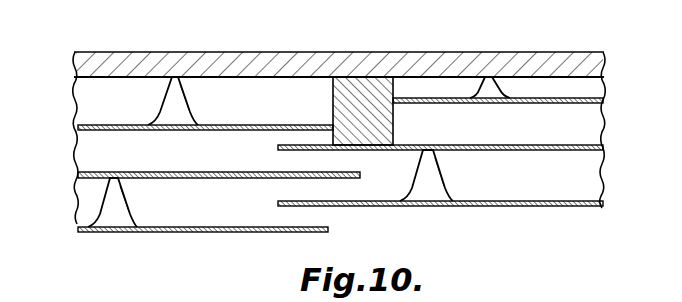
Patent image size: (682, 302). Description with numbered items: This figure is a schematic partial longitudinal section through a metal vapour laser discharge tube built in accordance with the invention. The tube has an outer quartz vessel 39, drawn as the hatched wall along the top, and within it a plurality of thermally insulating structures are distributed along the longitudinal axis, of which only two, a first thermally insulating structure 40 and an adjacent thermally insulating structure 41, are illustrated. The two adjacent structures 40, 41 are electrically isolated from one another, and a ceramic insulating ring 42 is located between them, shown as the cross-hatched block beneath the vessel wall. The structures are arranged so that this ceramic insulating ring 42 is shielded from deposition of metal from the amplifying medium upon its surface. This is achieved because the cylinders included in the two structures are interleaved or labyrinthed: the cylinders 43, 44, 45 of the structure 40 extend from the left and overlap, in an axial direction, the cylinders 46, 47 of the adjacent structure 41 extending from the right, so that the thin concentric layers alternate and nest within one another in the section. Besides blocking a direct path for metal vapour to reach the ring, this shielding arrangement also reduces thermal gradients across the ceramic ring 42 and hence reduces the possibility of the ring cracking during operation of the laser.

The outer quartz vessel 39 is at (436, 58).
The thermally insulating structure 40 is at (189, 177).
The thermally insulating structure 41 is at (463, 162).
The ceramic insulating ring 42 is at (360, 90).
The cylinder 43 is at (257, 125).
The cylinder 44 is at (222, 172).
The cylinder 45 is at (221, 233).
The cylinder 46 is at (508, 151).
The cylinder 47 is at (399, 207).